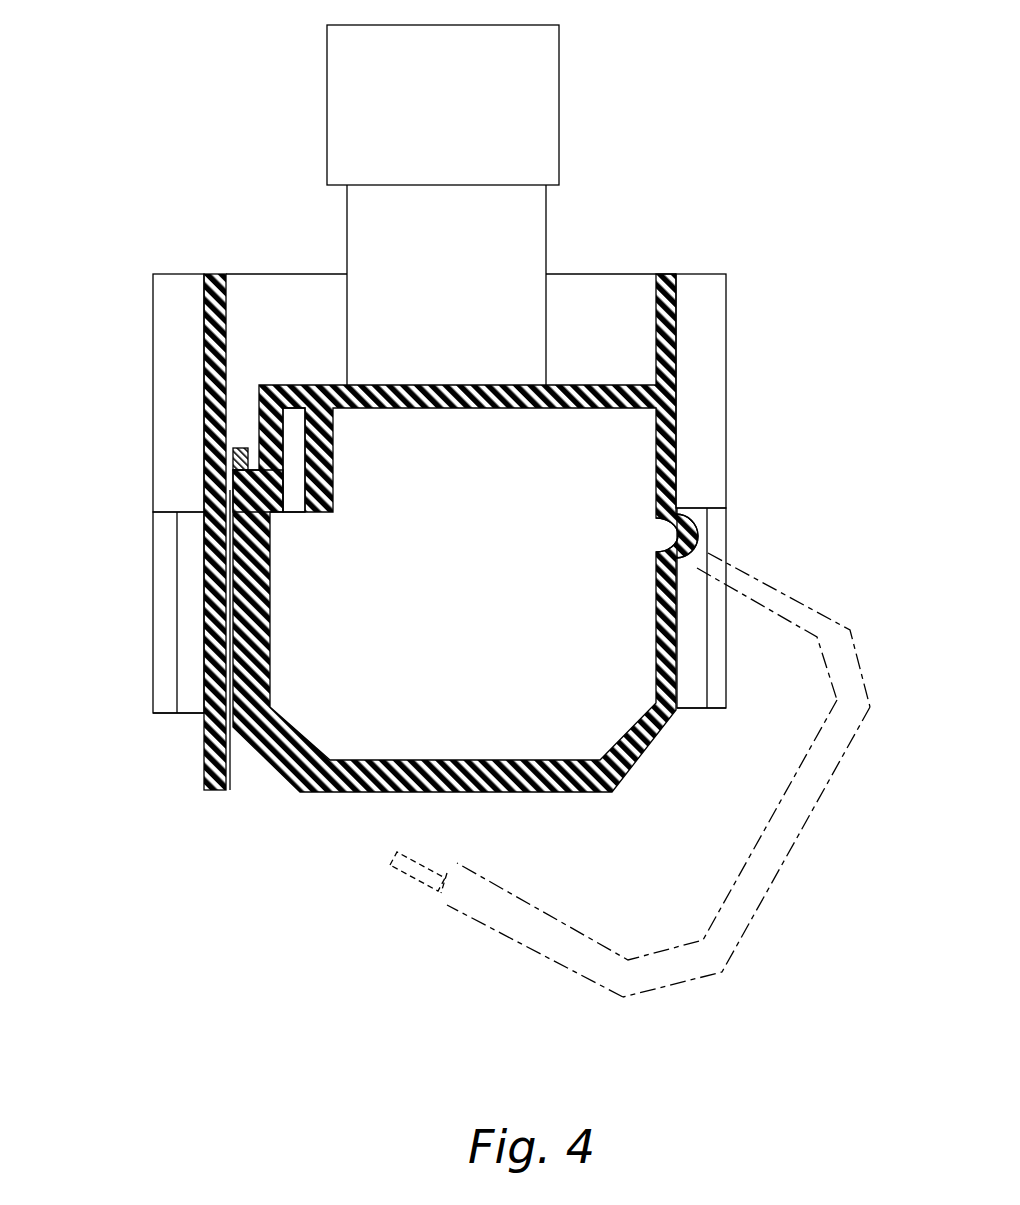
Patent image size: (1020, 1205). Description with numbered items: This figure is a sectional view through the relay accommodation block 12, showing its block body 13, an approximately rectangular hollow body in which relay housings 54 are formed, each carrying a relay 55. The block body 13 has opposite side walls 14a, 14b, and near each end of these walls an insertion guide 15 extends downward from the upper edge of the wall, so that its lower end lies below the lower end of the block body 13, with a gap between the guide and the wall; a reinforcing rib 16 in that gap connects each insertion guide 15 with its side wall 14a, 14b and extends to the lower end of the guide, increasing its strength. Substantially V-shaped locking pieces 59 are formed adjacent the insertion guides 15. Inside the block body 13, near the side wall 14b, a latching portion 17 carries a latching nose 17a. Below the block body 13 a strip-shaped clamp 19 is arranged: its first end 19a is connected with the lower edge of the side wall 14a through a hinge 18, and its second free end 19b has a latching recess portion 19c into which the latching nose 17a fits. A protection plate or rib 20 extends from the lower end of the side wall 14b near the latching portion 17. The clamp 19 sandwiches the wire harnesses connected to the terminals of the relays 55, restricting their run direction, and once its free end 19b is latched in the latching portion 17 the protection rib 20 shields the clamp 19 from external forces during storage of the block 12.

The relay accommodation block 12 is at (735, 187).
The block body 13 is at (667, 282).
The side wall 14a is at (680, 393).
The side wall 14b is at (203, 342).
The insertion guide 15 is at (167, 657).
The reinforcing rib 16 is at (188, 703).
The latching portion 17 is at (288, 514).
The latching nose 17a is at (232, 490).
The hinge 18 is at (698, 520).
The clamp 19 is at (300, 795).
The first end 19a is at (655, 578).
The second free end 19b is at (242, 448).
The latching recess portion 19c is at (203, 512).
The protection plate or rib 20 is at (203, 595).
The relay housing 54 is at (368, 212).
The relay 55 is at (336, 57).
The locking piece 59 is at (168, 292).